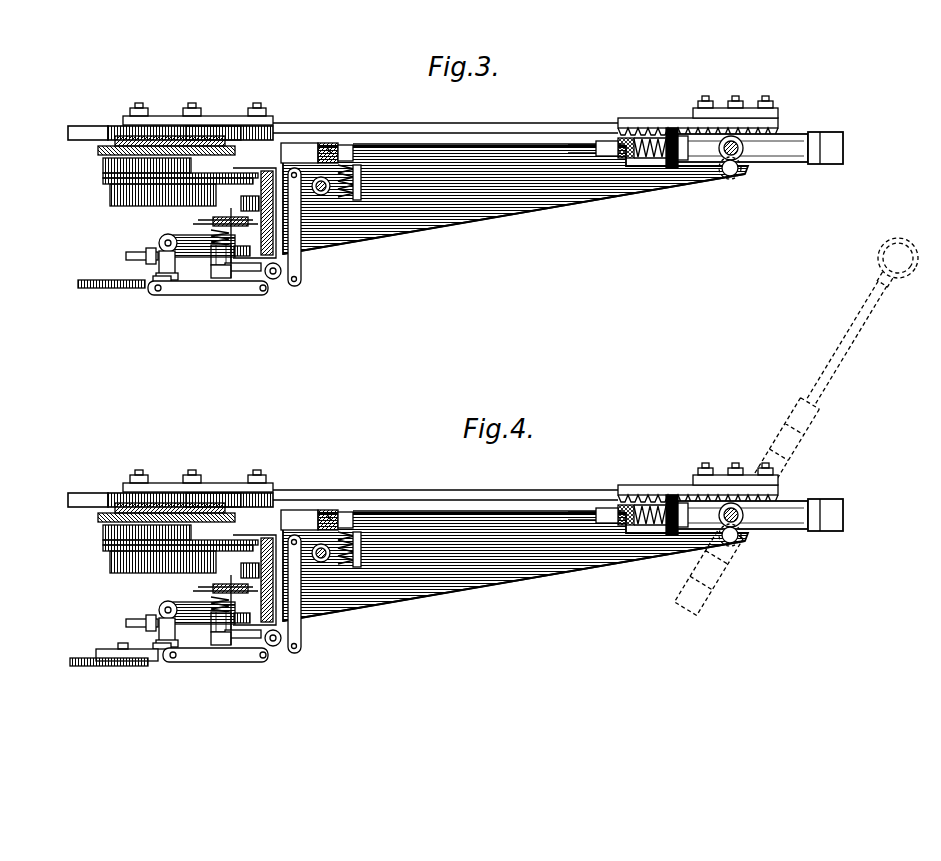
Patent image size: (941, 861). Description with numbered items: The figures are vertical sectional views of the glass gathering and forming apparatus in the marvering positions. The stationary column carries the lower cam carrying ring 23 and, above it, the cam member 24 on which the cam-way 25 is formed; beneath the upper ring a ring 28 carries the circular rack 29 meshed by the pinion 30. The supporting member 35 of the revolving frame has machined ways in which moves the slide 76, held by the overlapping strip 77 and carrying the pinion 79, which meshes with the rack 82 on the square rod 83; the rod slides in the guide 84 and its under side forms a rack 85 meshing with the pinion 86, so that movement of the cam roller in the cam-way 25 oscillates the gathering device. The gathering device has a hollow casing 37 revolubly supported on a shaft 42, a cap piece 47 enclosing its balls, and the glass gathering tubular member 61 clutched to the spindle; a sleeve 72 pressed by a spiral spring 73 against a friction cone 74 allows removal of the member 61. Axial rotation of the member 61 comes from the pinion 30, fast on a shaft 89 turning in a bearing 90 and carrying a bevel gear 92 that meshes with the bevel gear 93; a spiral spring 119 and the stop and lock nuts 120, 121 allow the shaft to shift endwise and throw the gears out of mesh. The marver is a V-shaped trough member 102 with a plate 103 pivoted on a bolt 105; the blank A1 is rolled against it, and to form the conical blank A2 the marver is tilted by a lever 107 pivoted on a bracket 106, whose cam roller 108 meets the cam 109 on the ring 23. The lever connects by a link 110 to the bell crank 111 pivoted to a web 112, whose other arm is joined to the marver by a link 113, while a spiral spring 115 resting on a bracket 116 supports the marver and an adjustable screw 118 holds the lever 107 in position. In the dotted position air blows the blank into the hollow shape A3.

In FIG. 3, the cam carrying ring 23 is at (92, 281).
In FIG. 4, the cam carrying ring 23 is at (107, 667).
In FIG. 3, the cam member 24 is at (190, 164).
In FIG. 4, the cam member 24 is at (155, 546).
In FIG. 3, the cam-way 25 is at (95, 158).
In FIG. 4, the cam-way 25 is at (125, 530).
In FIG. 3, the ring 28 is at (150, 176).
In FIG. 4, the ring 28 is at (151, 558).
In FIG. 3, the circular rack 29 is at (102, 187).
In FIG. 4, the circular rack 29 is at (138, 571).
In FIG. 3, the pinion 30 is at (257, 168).
In FIG. 4, the pinion 30 is at (254, 580).
In FIG. 3, the supporting member 35 is at (612, 198).
In FIG. 4, the supporting member 35 is at (514, 581).
In FIG. 3, the hollow casing 37 is at (778, 130).
In FIG. 4, the hollow casing 37 is at (746, 503).
In FIG. 3, the shaft 42 is at (735, 146).
In FIG. 4, the shaft 42 is at (723, 529).
In FIG. 3, the cap piece 47 is at (822, 126).
In FIG. 4, the cap piece 47 is at (825, 525).
In FIG. 3, the glass gathering tubular member 61 is at (488, 137).
In FIG. 4, the glass gathering tubular member 61 is at (515, 567).
In FIG. 3, the sleeve 72 is at (598, 132).
In FIG. 4, the sleeve 72 is at (593, 495).
In FIG. 3, the spiral spring 73 is at (636, 128).
In FIG. 4, the spiral spring 73 is at (642, 495).
In FIG. 3, the friction cone 74 is at (665, 162).
In FIG. 4, the friction cone 74 is at (667, 529).
In FIG. 3, the slide 76 is at (163, 133).
In FIG. 4, the slide 76 is at (166, 492).
In FIG. 3, the overlapping strip 77 is at (236, 107).
In FIG. 4, the overlapping strip 77 is at (198, 475).
In FIG. 3, the pinion 79 is at (208, 118).
In FIG. 4, the pinion 79 is at (213, 484).
In FIG. 3, the rack 82 is at (118, 117).
In FIG. 4, the rack 82 is at (184, 487).
In FIG. 3, the rod 83 is at (438, 122).
In FIG. 4, the rod 83 is at (525, 489).
In FIG. 3, the guide 84 is at (742, 102).
In FIG. 4, the guide 84 is at (735, 462).
In FIG. 3, the rack 85 is at (706, 111).
In FIG. 4, the rack 85 is at (698, 478).
In FIG. 3, the pinion 86 is at (724, 170).
In FIG. 4, the pinion 86 is at (743, 549).
In FIG. 3, the shaft 89 is at (200, 214).
In FIG. 4, the shaft 89 is at (225, 574).
In FIG. 3, the bearing 90 is at (210, 256).
In FIG. 4, the bearing 90 is at (207, 634).
In FIG. 3, the bevel gear 92 is at (203, 229).
In FIG. 4, the bevel gear 92 is at (201, 595).
In FIG. 3, the bevel gear 93 is at (249, 195).
In FIG. 4, the bevel gear 93 is at (249, 584).
In FIG. 3, the member 102 is at (290, 148).
In FIG. 4, the member 102 is at (310, 499).
In FIG. 3, the plate 103 is at (325, 150).
In FIG. 4, the plate 103 is at (359, 491).
In FIG. 3, the bolt 105 is at (316, 188).
In FIG. 4, the bolt 105 is at (359, 515).
In FIG. 3, the bracket 106 is at (160, 252).
In FIG. 4, the bracket 106 is at (182, 618).
In FIG. 3, the lever 107 is at (152, 241).
In FIG. 4, the lever 107 is at (184, 602).
In FIG. 3, the cam roller 108 is at (152, 274).
In FIG. 4, the cam roller 108 is at (145, 659).
In FIG. 4, the cam 109 is at (119, 639).
In FIG. 3, the link 110 is at (215, 288).
In FIG. 4, the link 110 is at (215, 669).
In FIG. 3, the bell crank 111 is at (273, 269).
In FIG. 4, the bell crank 111 is at (304, 649).
In FIG. 3, the web 112 is at (240, 264).
In FIG. 4, the web 112 is at (243, 634).
In FIG. 3, the link 113 is at (287, 232).
In FIG. 4, the link 113 is at (322, 594).
In FIG. 3, the spiral spring 115 is at (350, 170).
In FIG. 4, the spiral spring 115 is at (406, 517).
In FIG. 3, the bracket 116 is at (338, 192).
In FIG. 4, the bracket 116 is at (370, 582).
In FIG. 3, the adjustable screw 118 is at (128, 251).
In FIG. 4, the adjustable screw 118 is at (134, 615).
In FIG. 3, the spiral spring 119 is at (247, 243).
In FIG. 4, the spiral spring 119 is at (218, 616).
In FIG. 3, the stop nut 120 is at (210, 267).
In FIG. 4, the stop nut 120 is at (205, 660).
In FIG. 3, the lock nut 121 is at (218, 272).
In FIG. 4, the lock nut 121 is at (207, 640).
In FIG. 3, the blank A1 is at (320, 138).
In FIG. 4, the blank A2 is at (352, 480).
In FIG. 3, the blank A3 is at (880, 223).